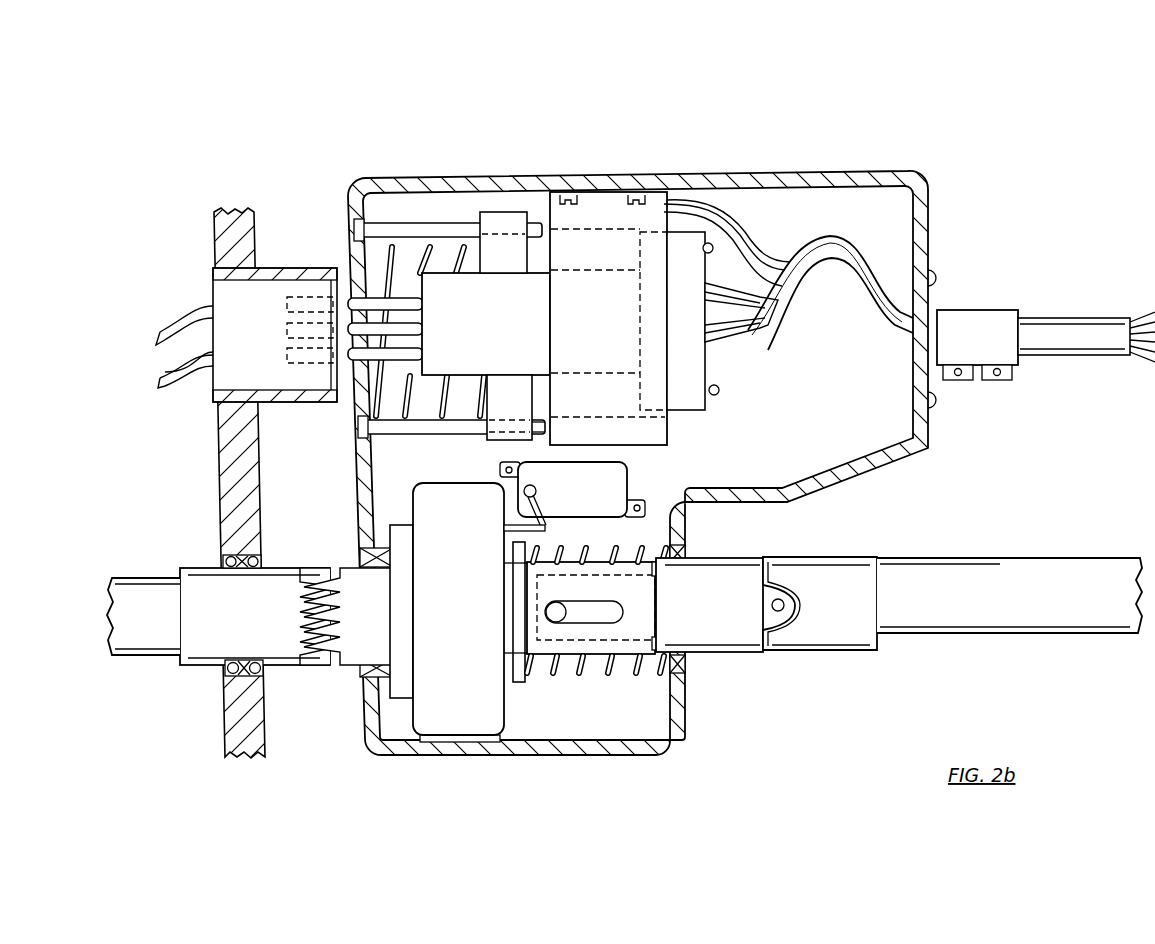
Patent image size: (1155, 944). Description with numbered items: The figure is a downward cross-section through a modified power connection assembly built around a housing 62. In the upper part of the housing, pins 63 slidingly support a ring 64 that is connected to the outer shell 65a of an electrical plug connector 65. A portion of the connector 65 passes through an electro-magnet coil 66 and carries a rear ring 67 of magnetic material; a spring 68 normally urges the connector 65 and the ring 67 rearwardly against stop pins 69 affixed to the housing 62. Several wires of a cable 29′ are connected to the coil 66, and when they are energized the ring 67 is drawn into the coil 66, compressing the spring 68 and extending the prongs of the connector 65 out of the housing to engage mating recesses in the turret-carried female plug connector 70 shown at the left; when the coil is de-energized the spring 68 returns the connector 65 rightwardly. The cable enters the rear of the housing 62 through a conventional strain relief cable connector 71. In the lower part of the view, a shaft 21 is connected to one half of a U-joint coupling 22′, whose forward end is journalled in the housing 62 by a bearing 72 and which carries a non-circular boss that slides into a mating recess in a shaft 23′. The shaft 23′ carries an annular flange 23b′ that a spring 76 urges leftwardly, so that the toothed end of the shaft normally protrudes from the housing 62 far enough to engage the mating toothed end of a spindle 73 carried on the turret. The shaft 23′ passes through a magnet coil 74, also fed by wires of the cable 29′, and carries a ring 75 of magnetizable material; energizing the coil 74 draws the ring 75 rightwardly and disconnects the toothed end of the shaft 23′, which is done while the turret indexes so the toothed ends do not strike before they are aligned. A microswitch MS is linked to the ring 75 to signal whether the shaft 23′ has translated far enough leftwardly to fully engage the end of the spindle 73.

The shaft 21 is at (1005, 557).
The U-joint coupling 22′ is at (835, 655).
The shaft 23′ is at (342, 668).
The annular flange 23b′ is at (528, 684).
The cable 29′ is at (873, 340).
The housing 62 is at (494, 177).
The pins 63 is at (430, 230).
The ring 64 is at (512, 387).
The electrical plug connector 65 is at (449, 324).
The outer shell 65a is at (460, 378).
The electro-magnet coil 66 is at (667, 440).
The rear ring 67 is at (700, 348).
The spring 68 is at (430, 265).
The stop pins 69 is at (711, 252).
The female plug connector 70 is at (318, 404).
The strain relief cable connector 71 is at (988, 310).
The bearing 72 is at (688, 657).
The spindle 73 is at (145, 574).
The magnet coil 74 is at (458, 612).
The ring 75 is at (392, 704).
The spring 76 is at (612, 665).
The microswitch MS is at (572, 496).